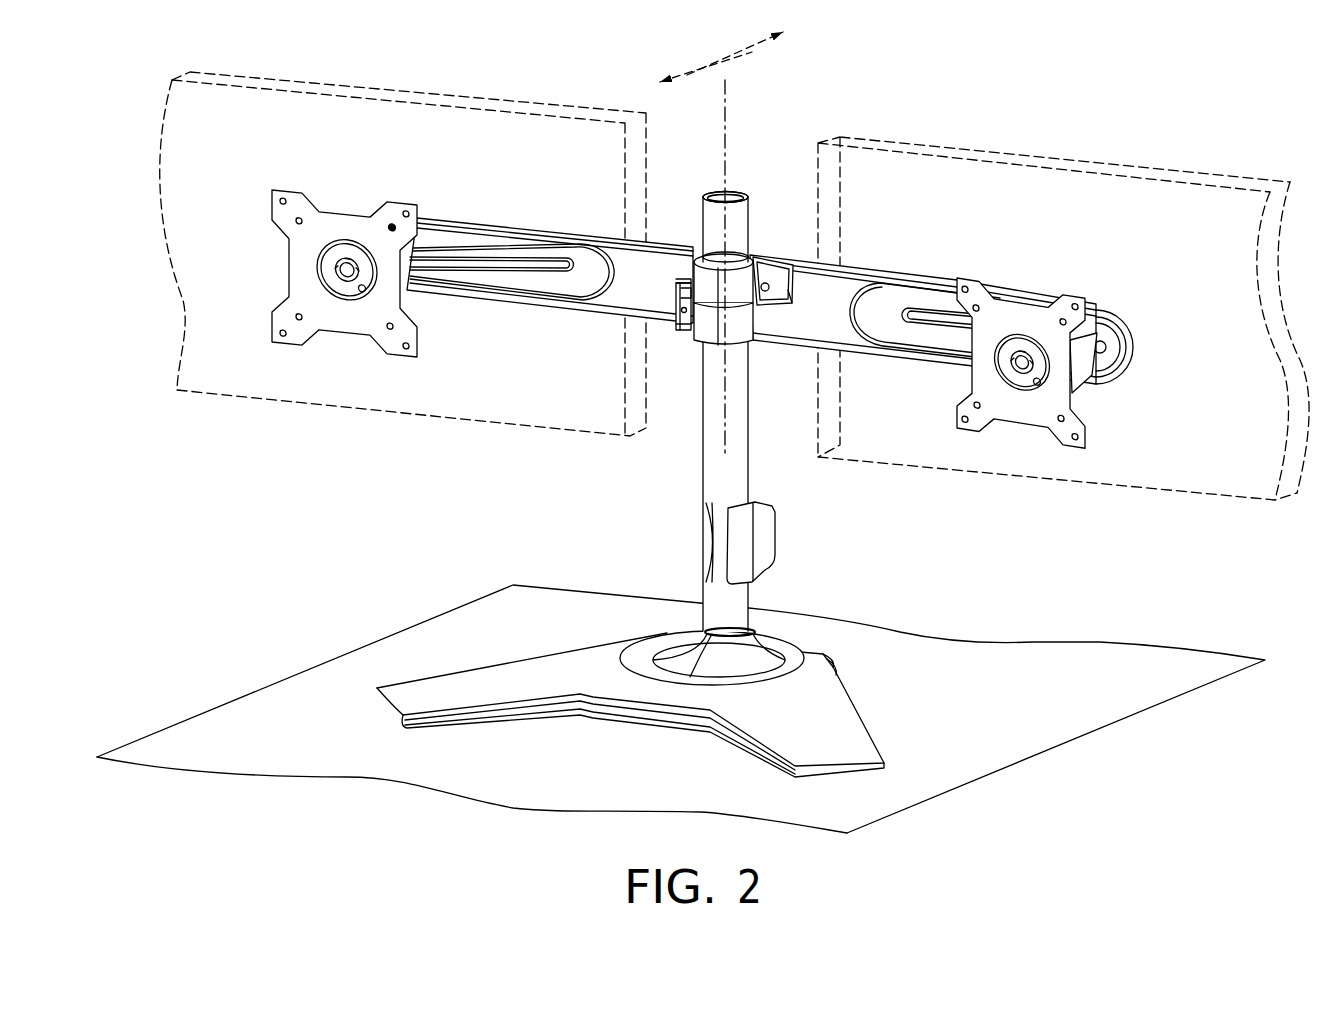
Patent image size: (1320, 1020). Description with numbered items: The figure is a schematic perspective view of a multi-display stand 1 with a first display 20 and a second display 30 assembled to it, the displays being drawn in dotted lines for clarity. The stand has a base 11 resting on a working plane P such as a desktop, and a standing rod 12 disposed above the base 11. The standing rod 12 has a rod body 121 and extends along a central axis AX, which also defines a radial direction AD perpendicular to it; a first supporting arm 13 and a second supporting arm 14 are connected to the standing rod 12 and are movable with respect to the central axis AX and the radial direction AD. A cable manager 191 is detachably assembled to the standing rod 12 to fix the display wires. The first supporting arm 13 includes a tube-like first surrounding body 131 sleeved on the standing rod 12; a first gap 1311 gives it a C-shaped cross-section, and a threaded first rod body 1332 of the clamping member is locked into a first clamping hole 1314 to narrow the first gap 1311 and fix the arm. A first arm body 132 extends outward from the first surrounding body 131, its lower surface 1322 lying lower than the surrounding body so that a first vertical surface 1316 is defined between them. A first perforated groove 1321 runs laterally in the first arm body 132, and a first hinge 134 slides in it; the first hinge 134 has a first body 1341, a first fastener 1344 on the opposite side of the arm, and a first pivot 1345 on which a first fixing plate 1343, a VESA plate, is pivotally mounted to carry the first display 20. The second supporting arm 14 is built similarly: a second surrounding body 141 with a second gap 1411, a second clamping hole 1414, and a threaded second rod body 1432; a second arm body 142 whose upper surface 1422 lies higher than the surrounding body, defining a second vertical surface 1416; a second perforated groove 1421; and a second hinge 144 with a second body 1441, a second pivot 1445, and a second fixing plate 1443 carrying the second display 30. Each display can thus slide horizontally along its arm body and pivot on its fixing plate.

The multi-display stand 1 is at (140, 83).
The base 11 is at (528, 752).
The standing rod 12 is at (737, 414).
The rod body 121 is at (748, 463).
The cable manager 191 is at (768, 548).
The first supporting arm 13 is at (925, 311).
The first surrounding body 131 is at (759, 290).
The first gap 1311 is at (789, 298).
The first clamping hole 1314 is at (793, 302).
The first vertical surface 1316 is at (712, 193).
The first arm body 132 is at (892, 260).
The first perforated groove 1321 is at (937, 313).
The lower surface of first arm body 1322 is at (898, 362).
The first rod body 1332 is at (766, 293).
The first hinge 134 is at (986, 413).
The first body 1341 is at (1083, 378).
The first fixing plate 1343 is at (978, 423).
The first fastener 1344 is at (1097, 313).
The first pivot 1345 is at (1020, 367).
The second supporting arm 14 is at (542, 259).
The second surrounding body 141 is at (692, 345).
The second gap 1411 is at (685, 326).
The second clamping hole 1414 is at (686, 290).
The second vertical surface 1416 is at (682, 288).
The second rod body 1432 is at (676, 303).
The second arm body 142 is at (572, 187).
The second perforated groove 1421 is at (490, 250).
The upper surface of second arm body 1422 is at (450, 213).
The second hinge 144 is at (322, 335).
The second body 1441 is at (413, 285).
The second fixing plate 1443 is at (282, 322).
The second pivot 1445 is at (347, 277).
The first display 20 is at (1235, 174).
The second display 30 is at (235, 77).
The working plane P is at (1173, 688).
The central axis AX is at (727, 157).
The radial direction AD is at (760, 57).